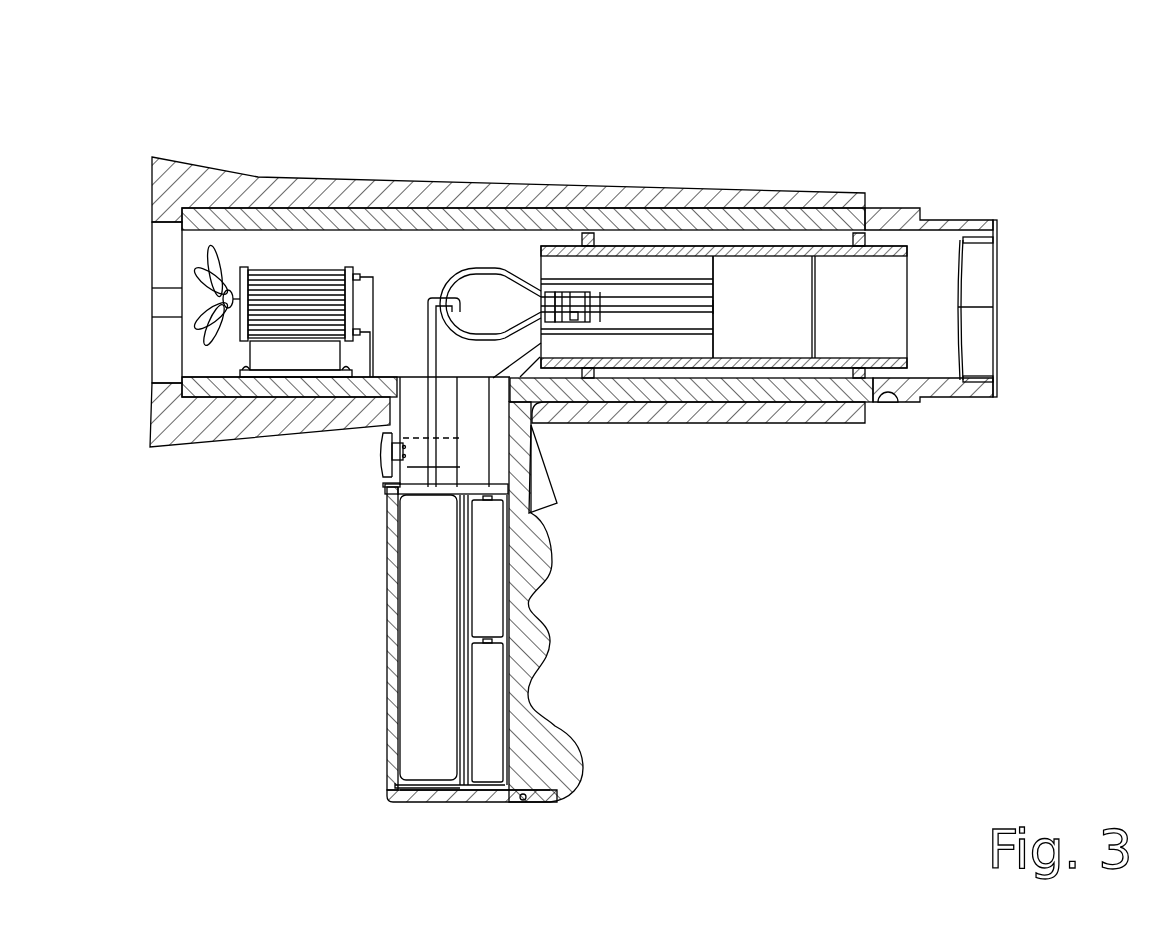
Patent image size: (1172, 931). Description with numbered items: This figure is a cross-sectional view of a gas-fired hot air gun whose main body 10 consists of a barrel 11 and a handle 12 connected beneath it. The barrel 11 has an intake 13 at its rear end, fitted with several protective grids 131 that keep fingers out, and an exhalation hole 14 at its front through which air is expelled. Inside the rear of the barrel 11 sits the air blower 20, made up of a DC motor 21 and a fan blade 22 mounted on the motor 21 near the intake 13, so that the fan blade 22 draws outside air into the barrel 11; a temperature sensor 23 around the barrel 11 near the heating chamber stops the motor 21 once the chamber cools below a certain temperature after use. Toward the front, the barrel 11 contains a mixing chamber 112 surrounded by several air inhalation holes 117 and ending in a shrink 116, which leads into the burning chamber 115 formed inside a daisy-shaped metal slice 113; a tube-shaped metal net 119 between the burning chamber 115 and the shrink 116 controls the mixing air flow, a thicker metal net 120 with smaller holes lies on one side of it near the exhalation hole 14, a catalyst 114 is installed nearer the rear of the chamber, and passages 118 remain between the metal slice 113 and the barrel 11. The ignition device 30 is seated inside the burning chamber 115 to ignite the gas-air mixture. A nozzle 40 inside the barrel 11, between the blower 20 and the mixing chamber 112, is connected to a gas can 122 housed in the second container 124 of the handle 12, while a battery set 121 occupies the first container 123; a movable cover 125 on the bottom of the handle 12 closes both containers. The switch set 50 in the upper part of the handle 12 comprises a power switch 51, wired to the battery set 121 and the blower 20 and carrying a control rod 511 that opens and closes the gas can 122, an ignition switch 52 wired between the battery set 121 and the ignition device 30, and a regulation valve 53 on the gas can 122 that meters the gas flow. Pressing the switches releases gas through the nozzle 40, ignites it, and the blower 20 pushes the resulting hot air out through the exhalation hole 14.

The main body 10 is at (782, 564).
The barrel 11 is at (731, 417).
The mixing chamber 112 is at (517, 275).
The daisy shape metal slice 113 is at (714, 272).
The catalyst 114 is at (812, 270).
The burning chamber 115 is at (586, 292).
The shrink 116 is at (550, 292).
The air inhalation holes 117 is at (487, 270).
The passages 118 is at (710, 307).
The tube shaped metal net 119 is at (571, 293).
The thicker metal net 120 is at (601, 290).
The handle 12 is at (463, 631).
The battery set 121 is at (488, 667).
The gas can 122 is at (415, 727).
The first container 123 is at (517, 802).
The second container 124 is at (402, 785).
The movable cover 125 is at (437, 800).
The intake 13 is at (152, 186).
The protective grids 131 is at (162, 240).
The exhalation hole 14 is at (998, 355).
The air blower 20 is at (299, 229).
The motor 21 is at (322, 277).
The fan blade 22 is at (209, 262).
The temperature sensor 23 is at (889, 398).
The ignition device 30 is at (576, 319).
The nozzle 40 is at (427, 317).
The switch set 50 is at (319, 516).
The power switch 51 is at (381, 449).
The control rod 511 is at (396, 490).
The ignition switch 52 is at (545, 485).
The regulation valve 53 is at (340, 517).